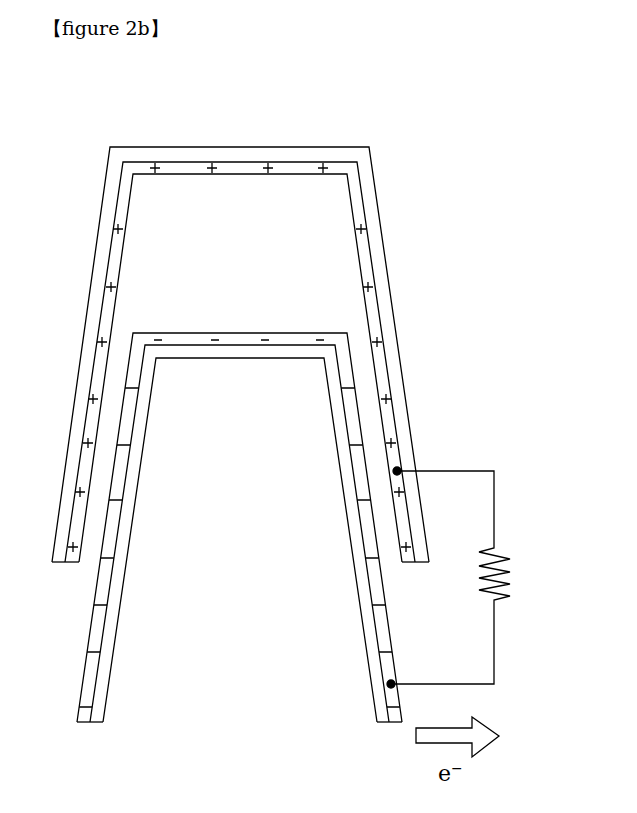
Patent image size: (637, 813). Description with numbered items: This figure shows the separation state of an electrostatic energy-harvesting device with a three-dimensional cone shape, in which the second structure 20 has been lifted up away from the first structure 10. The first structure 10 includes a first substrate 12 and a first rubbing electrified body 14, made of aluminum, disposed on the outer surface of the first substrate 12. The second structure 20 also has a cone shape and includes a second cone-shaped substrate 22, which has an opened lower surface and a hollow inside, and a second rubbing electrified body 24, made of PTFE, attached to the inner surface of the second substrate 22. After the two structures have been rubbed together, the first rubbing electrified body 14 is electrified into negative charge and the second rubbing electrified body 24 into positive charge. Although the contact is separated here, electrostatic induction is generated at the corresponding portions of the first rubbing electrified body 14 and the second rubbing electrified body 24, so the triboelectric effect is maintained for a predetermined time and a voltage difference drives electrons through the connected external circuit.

The first structure 10 is at (362, 631).
The first substrate 12 is at (377, 707).
The first rubbing electrified body 14 is at (387, 673).
The second structure 20 is at (394, 316).
The second substrate 22 is at (381, 367).
The second rubbing electrified body 24 is at (396, 388).